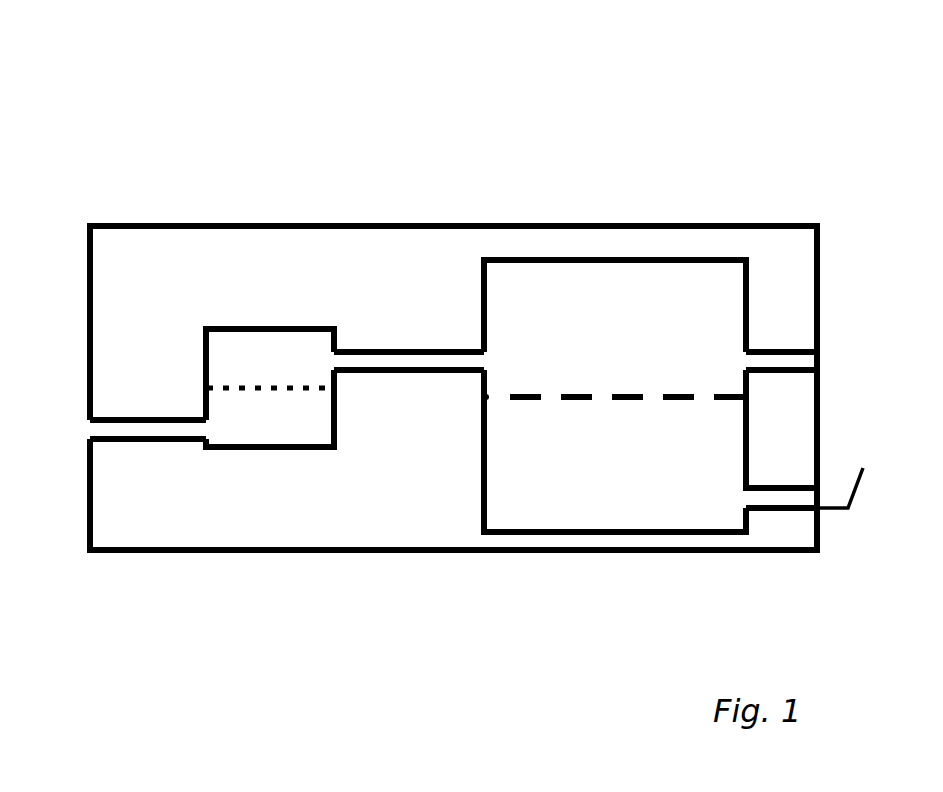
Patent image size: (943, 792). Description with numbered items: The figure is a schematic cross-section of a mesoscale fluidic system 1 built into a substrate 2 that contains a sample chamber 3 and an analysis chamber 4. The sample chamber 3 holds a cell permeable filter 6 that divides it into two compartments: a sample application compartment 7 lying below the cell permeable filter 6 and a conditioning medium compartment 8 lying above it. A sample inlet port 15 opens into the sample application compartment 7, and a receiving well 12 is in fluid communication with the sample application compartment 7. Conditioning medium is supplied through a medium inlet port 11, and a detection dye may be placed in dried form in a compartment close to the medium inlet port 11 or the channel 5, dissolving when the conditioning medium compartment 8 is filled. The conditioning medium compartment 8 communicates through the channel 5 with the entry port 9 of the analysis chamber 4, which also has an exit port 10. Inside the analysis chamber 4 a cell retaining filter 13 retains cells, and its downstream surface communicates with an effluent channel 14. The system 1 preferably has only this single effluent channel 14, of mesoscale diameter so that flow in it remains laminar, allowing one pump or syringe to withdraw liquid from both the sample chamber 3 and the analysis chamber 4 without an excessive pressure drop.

The mesoscale fluidic system 1 is at (658, 156).
The substrate 2 is at (453, 221).
The sample chamber 3 is at (613, 258).
The analysis chamber 4 is at (270, 450).
The channel 5 is at (410, 374).
The cell permeable filter 6 is at (485, 398).
The sample application compartment 7 is at (587, 443).
The conditioning medium compartment 8 is at (613, 312).
The entry port 9 is at (333, 347).
The exit port 10 is at (202, 448).
The medium inlet port 11 is at (768, 350).
The receiving well 12 is at (840, 490).
The cell retaining filter 13 is at (203, 387).
The effluent channel 14 is at (158, 442).
The sample inlet port 15 is at (750, 512).